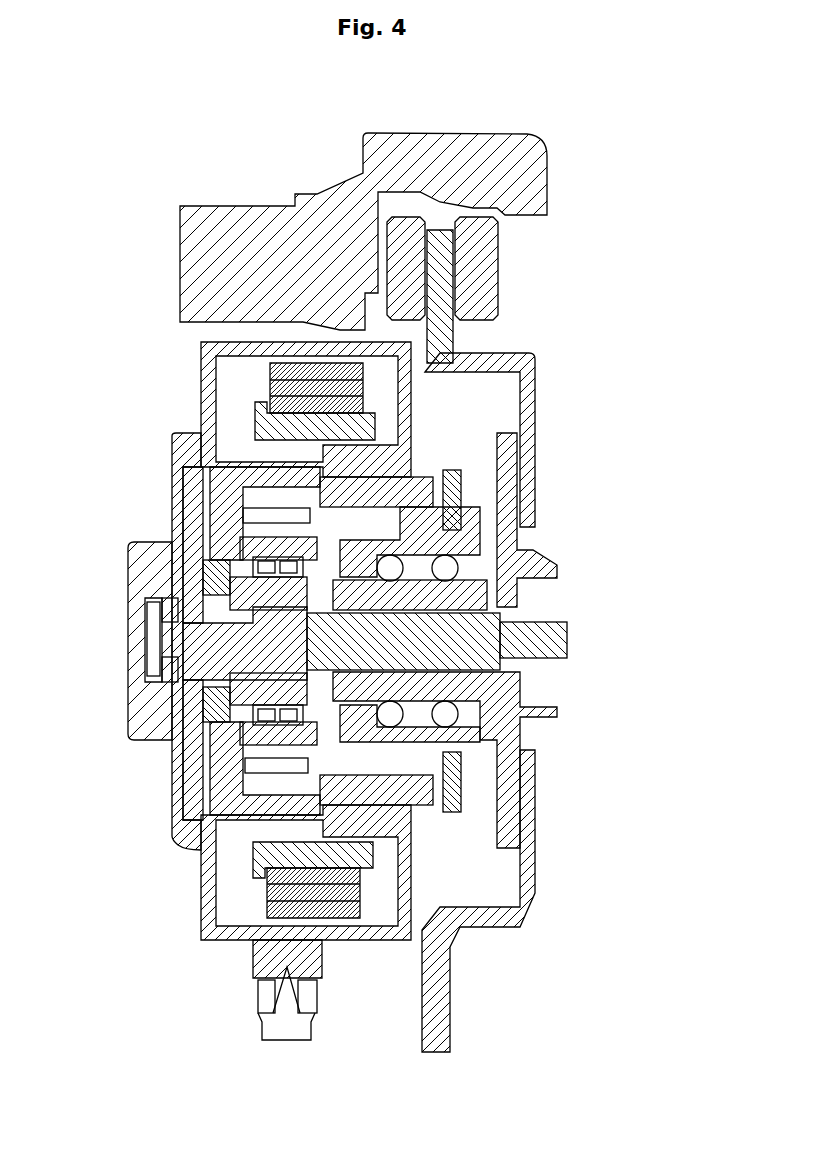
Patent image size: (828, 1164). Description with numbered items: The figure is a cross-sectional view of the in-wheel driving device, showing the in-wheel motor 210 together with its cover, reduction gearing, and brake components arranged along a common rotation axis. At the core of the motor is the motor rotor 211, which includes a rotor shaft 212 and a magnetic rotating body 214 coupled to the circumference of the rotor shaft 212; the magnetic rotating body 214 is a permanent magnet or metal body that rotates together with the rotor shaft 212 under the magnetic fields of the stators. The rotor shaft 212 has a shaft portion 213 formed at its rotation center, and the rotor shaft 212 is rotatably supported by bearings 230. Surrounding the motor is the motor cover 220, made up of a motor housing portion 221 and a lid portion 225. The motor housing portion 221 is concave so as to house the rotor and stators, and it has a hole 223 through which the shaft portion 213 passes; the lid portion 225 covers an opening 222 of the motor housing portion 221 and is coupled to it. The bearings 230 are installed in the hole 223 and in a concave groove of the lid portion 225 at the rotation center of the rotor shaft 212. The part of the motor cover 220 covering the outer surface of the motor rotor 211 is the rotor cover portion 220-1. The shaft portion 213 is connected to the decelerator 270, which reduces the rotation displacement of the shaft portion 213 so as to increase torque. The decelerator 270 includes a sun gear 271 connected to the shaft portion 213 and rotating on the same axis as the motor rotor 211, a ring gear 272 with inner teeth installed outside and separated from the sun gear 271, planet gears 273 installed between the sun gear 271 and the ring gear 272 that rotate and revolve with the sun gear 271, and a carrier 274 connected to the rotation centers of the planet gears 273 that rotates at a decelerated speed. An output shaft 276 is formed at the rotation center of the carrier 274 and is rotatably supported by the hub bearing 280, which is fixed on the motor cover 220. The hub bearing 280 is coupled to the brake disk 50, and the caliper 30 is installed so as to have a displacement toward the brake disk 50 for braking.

The caliper 30 is at (257, 224).
The brake disk 50 is at (527, 368).
The in-wheel motor 210 is at (320, 613).
The motor rotor 211 is at (216, 640).
The rotor shaft 212 is at (215, 490).
The shaft portion 213 is at (240, 637).
The magnetic rotating body 214 is at (287, 397).
The motor cover 220 is at (361, 691).
The rotor cover portion 220-1 is at (428, 428).
The motor housing portion 221 is at (267, 952).
The opening 222 is at (223, 845).
The hole 223 is at (160, 608).
The lid portion 225 is at (202, 908).
The bearing 230 is at (217, 573).
The decelerator 270 is at (455, 622).
The sun gear 271 is at (453, 603).
The ring gear 272 is at (308, 493).
The planet gears 273 is at (292, 513).
The carrier 274 is at (554, 624).
The output shaft 276 is at (477, 650).
The hub bearing 280 is at (500, 688).